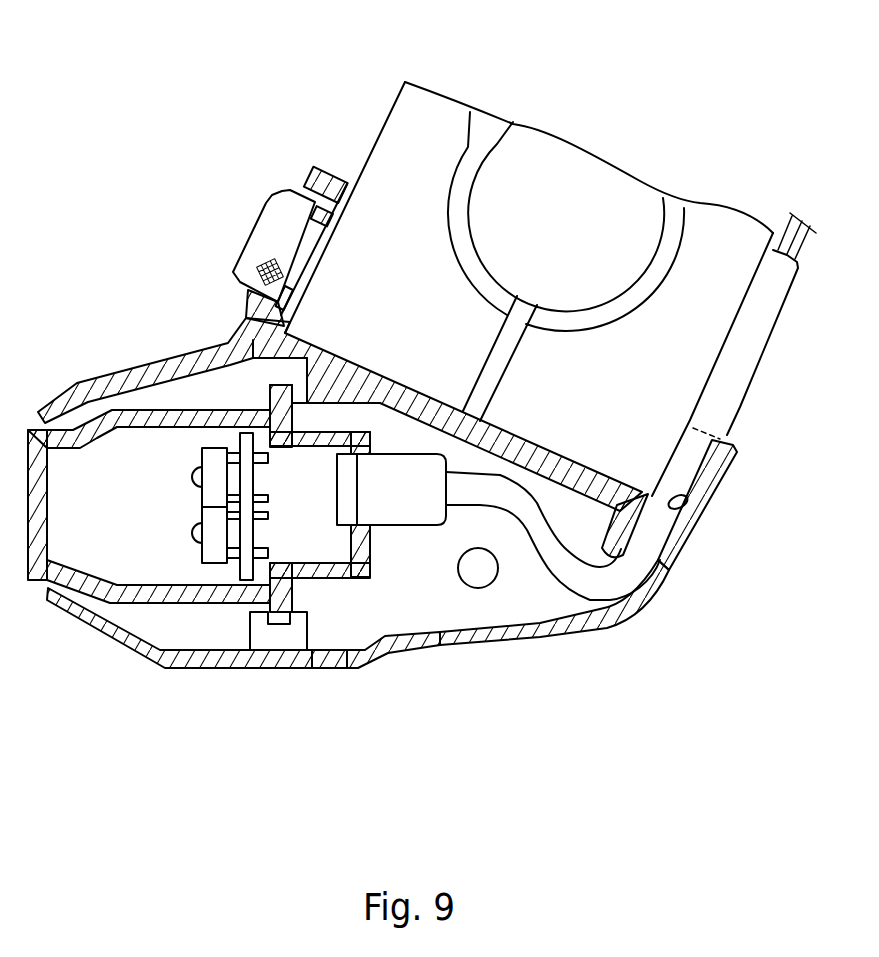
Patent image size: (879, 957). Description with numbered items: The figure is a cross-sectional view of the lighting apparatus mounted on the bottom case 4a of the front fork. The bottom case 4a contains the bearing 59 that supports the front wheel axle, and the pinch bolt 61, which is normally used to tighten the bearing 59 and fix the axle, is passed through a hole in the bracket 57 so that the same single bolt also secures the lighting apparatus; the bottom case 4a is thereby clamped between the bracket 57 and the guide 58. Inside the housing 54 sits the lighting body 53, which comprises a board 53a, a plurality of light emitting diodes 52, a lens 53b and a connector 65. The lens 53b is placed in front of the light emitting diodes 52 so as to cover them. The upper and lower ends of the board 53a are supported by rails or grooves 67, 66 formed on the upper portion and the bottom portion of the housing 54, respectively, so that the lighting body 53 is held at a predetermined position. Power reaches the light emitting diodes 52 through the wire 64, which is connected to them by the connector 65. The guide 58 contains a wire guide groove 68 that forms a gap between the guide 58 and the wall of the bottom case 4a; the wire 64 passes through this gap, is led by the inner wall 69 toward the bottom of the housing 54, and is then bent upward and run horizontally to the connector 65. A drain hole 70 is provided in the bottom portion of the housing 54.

The bottom case 4a is at (403, 133).
The bearing 59 is at (467, 170).
The bracket 57 is at (330, 167).
The pinch bolt 61 is at (283, 213).
The rail 67 is at (273, 370).
The light emitting diodes 52 is at (183, 537).
The connector 65 is at (408, 513).
The wire 64 is at (733, 370).
The guide 58 is at (737, 452).
The wire guide groove 68 is at (690, 501).
The inner wall 69 is at (617, 543).
The housing 54 is at (610, 628).
The board 53a is at (378, 655).
The drain hole 70 is at (328, 668).
The rail 66 is at (265, 635).
The lighting body 53 is at (168, 618).
The lens 53b is at (30, 563).